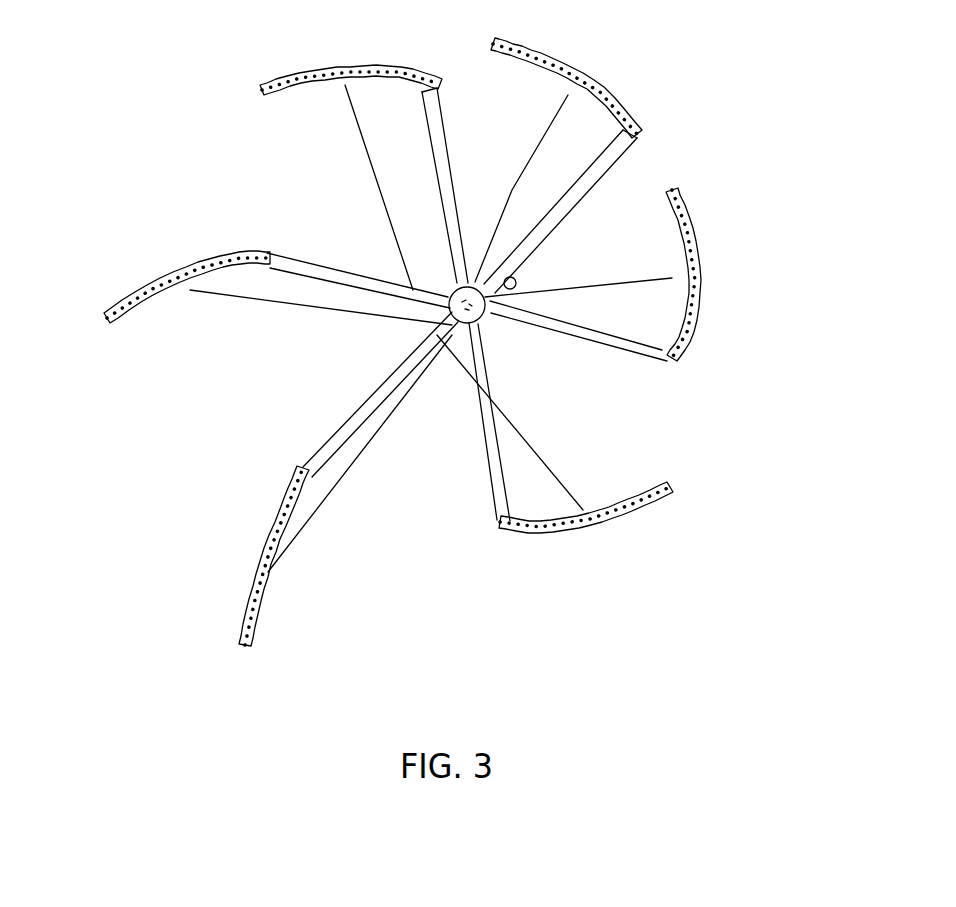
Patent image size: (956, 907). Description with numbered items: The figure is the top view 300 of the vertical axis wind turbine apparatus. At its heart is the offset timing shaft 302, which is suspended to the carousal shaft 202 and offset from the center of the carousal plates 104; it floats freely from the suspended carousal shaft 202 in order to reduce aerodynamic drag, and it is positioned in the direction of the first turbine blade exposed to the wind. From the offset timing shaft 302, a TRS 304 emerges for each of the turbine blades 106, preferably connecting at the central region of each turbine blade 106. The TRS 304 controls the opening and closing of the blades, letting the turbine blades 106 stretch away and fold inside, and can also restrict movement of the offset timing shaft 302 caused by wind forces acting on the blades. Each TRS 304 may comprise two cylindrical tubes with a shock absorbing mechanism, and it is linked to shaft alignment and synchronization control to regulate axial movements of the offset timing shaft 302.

The top view 300 is at (172, 99).
The carousal plates 104 is at (494, 300).
The turbine blades 106 is at (697, 288).
The offset timing shaft 302 is at (423, 328).
The carousal shaft 202 is at (342, 432).
The TRS 304 is at (520, 428).